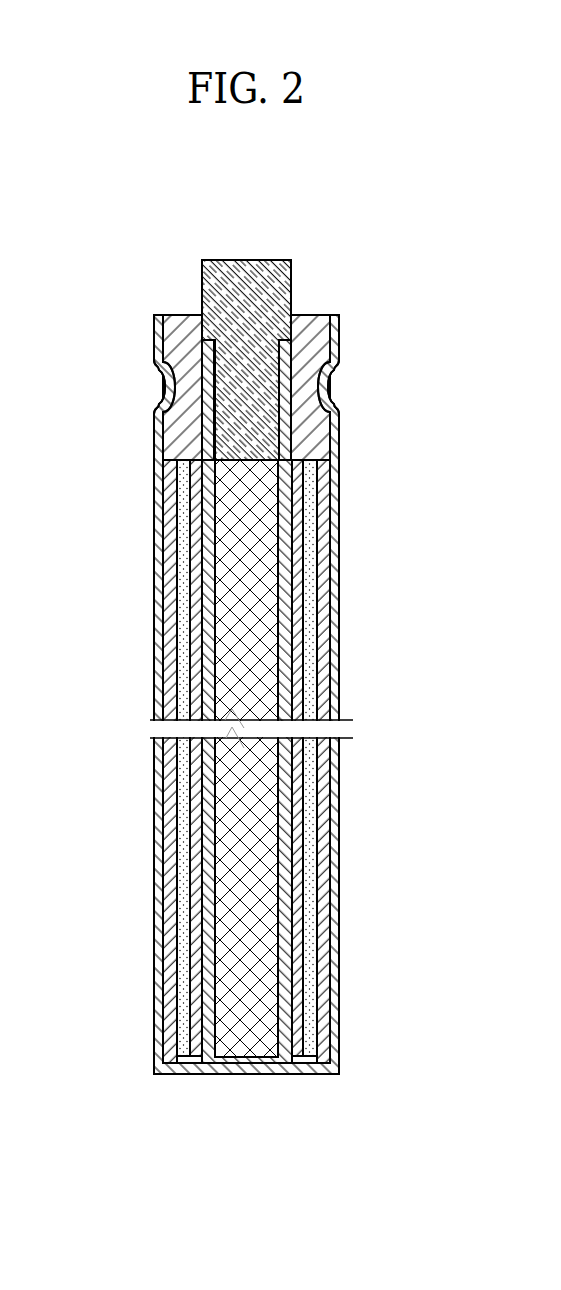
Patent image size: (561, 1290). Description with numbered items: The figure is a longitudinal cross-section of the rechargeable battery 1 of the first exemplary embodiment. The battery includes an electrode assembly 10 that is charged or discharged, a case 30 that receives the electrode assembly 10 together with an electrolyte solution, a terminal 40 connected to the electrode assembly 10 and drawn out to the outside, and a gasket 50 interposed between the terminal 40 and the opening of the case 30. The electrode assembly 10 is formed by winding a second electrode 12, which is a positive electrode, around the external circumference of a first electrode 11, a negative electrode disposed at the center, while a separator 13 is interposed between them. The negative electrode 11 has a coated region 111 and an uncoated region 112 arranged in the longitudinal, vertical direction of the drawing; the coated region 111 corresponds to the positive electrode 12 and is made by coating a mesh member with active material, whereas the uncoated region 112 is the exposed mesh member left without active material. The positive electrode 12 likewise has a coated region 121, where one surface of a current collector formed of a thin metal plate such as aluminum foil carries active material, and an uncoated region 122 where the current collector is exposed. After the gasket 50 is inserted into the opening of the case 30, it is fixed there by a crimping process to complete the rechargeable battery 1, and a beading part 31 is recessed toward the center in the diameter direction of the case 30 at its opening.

The rechargeable battery 1 is at (107, 208).
The electrode assembly 10 is at (298, 761).
The first electrode 11 is at (178, 701).
The coated region 111 is at (207, 489).
The uncoated region 112 is at (207, 441).
The second electrode 12 is at (305, 758).
The coated region 121 is at (308, 757).
The uncoated region 122 is at (322, 779).
The separator 13 is at (298, 984).
The case 30 is at (340, 863).
The beading part 31 is at (325, 385).
The terminal 40 is at (248, 260).
The gasket 50 is at (317, 327).